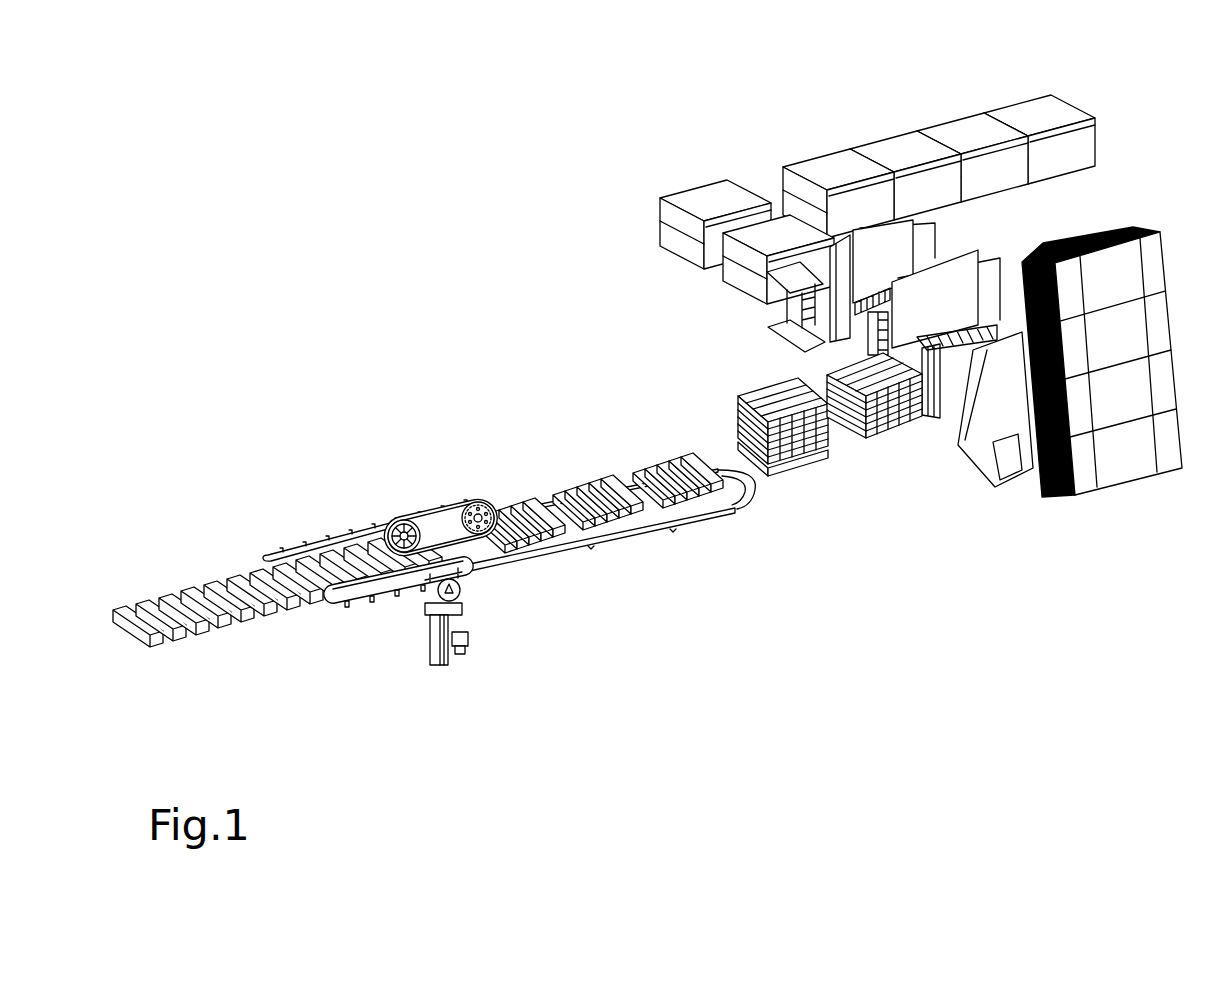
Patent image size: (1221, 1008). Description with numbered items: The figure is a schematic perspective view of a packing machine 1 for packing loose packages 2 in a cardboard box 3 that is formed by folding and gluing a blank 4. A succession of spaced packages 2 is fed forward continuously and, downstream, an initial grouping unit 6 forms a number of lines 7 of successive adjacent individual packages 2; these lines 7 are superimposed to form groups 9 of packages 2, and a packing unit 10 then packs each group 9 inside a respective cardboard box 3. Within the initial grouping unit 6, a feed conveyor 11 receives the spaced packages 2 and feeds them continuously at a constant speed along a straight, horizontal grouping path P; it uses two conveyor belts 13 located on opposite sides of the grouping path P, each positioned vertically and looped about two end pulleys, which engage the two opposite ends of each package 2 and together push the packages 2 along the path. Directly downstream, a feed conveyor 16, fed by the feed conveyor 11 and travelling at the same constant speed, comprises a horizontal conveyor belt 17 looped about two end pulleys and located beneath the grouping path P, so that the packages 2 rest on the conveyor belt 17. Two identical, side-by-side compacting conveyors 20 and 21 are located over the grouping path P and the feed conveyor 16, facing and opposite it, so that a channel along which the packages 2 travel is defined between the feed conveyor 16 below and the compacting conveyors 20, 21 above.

The packing machine 1 is at (266, 183).
The packages 2 is at (185, 633).
The cardboard box 3 is at (1027, 108).
The blank 4 is at (1132, 468).
The initial grouping unit 6 is at (428, 444).
The lines 7 is at (582, 471).
The groups 9 is at (893, 458).
The packing unit 10 is at (679, 324).
The feed conveyor 11 is at (313, 524).
The conveyor belts 13 is at (337, 606).
The feed conveyor 16 is at (573, 589).
The conveyor belt 17 is at (672, 523).
The compacting conveyor 20 is at (480, 477).
The compacting conveyor 21 is at (381, 497).
The grouping path P is at (627, 487).